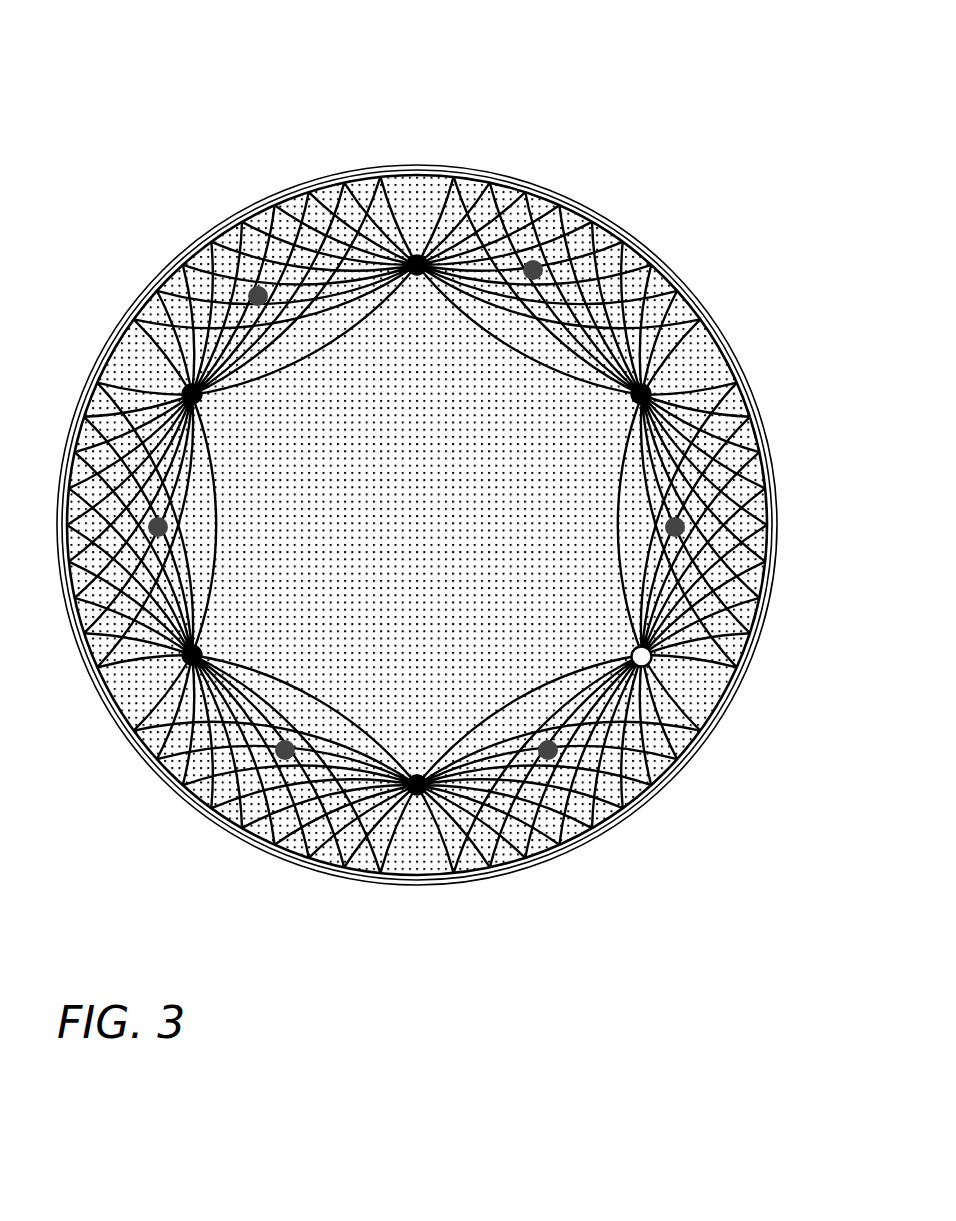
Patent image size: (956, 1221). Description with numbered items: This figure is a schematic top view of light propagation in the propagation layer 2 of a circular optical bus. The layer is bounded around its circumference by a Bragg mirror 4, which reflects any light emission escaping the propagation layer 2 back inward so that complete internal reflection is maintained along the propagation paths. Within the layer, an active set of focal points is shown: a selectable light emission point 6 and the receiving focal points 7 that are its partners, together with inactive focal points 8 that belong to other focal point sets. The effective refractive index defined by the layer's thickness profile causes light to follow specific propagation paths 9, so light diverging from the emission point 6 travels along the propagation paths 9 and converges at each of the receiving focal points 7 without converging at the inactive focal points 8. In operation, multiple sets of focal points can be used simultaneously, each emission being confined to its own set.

The propagation layer 2 is at (421, 566).
The circumferential Bragg mirror 4 is at (500, 166).
The light emission point 6 is at (690, 700).
The receiving focal points 7 is at (176, 385).
The inactive focal points 8 is at (243, 283).
The propagation paths 9 is at (389, 221).